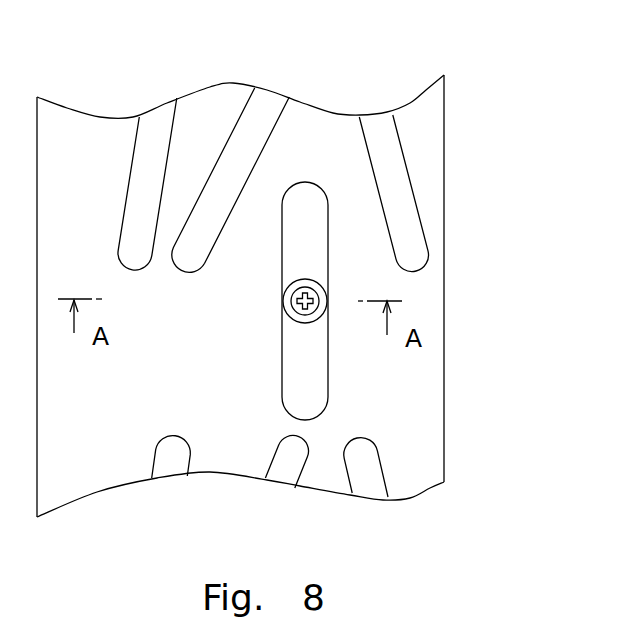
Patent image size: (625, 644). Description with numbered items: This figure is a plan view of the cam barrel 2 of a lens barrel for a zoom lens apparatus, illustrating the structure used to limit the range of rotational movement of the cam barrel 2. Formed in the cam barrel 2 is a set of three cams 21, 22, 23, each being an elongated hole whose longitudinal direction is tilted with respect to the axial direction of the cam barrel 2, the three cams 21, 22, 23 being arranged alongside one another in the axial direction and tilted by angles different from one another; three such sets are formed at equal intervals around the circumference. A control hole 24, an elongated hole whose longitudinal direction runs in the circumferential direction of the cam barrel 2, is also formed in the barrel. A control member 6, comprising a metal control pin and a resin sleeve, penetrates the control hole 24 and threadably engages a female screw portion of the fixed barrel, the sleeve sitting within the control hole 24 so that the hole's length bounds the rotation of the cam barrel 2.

The cam barrel 2 is at (428, 397).
The cam 21 is at (397, 180).
The cam 22 is at (257, 128).
The cam 23 is at (145, 153).
The control hole 24 is at (310, 397).
The control member 6 is at (325, 298).